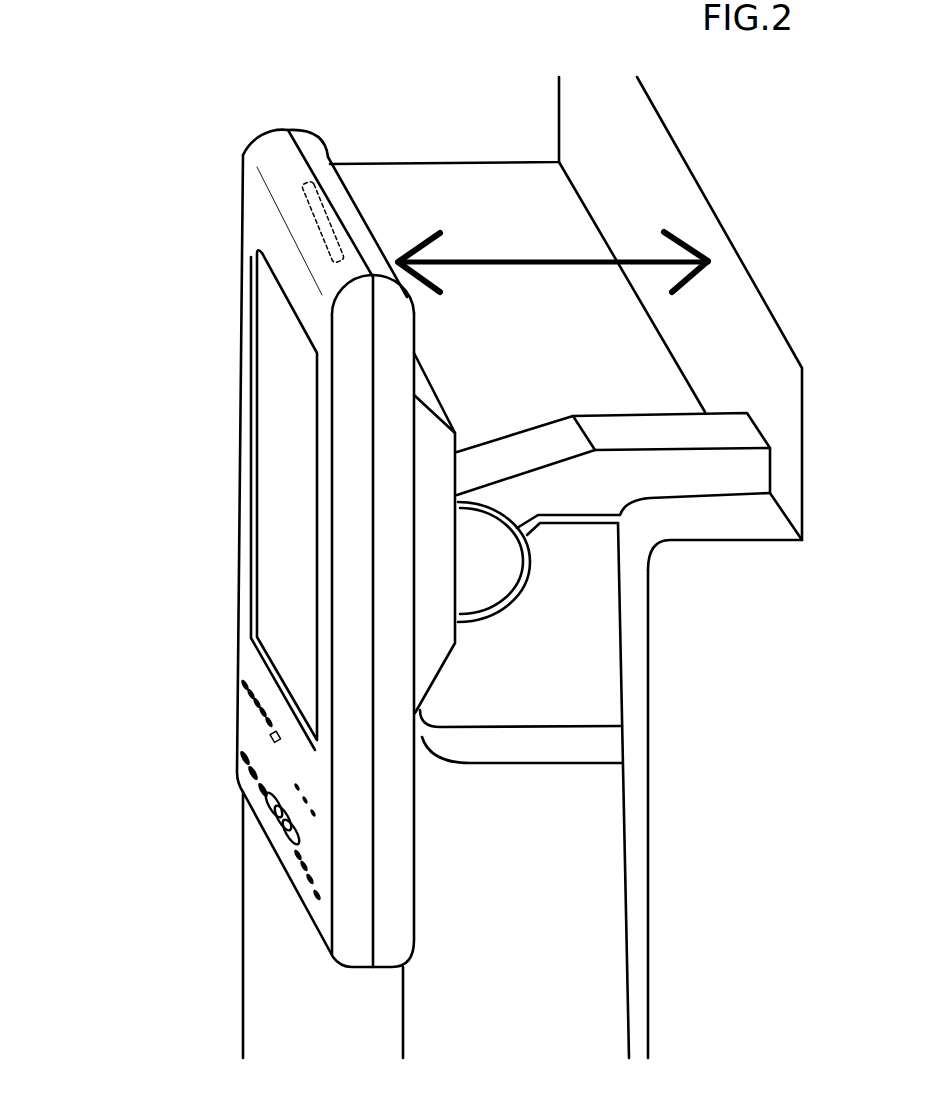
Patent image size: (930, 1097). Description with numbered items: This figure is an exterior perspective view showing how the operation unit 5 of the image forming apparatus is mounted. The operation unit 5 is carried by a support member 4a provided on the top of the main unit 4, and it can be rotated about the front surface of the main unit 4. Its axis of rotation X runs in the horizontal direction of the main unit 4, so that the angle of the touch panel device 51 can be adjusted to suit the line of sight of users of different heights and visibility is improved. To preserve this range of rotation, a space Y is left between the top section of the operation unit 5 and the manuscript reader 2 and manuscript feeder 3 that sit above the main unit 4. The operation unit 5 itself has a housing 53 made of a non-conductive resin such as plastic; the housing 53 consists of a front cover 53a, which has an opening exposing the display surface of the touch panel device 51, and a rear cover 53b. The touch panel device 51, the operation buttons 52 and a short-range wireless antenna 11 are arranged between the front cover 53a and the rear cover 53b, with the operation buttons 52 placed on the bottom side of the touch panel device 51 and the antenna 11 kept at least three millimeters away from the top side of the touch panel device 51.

The manuscript reader 2 is at (566, 274).
The manuscript feeder 3 is at (522, 107).
The main unit 4 is at (209, 990).
The support member 4a is at (542, 447).
The operation unit 5 is at (203, 607).
The touch panel device 51 is at (277, 408).
The operation buttons 52 is at (282, 828).
The housing 53 is at (217, 165).
The front cover 53a is at (280, 163).
The rear cover 53b is at (330, 150).
The short-range wireless antenna 11 is at (320, 233).
The axis of rotation X is at (472, 562).
The space Y is at (553, 244).